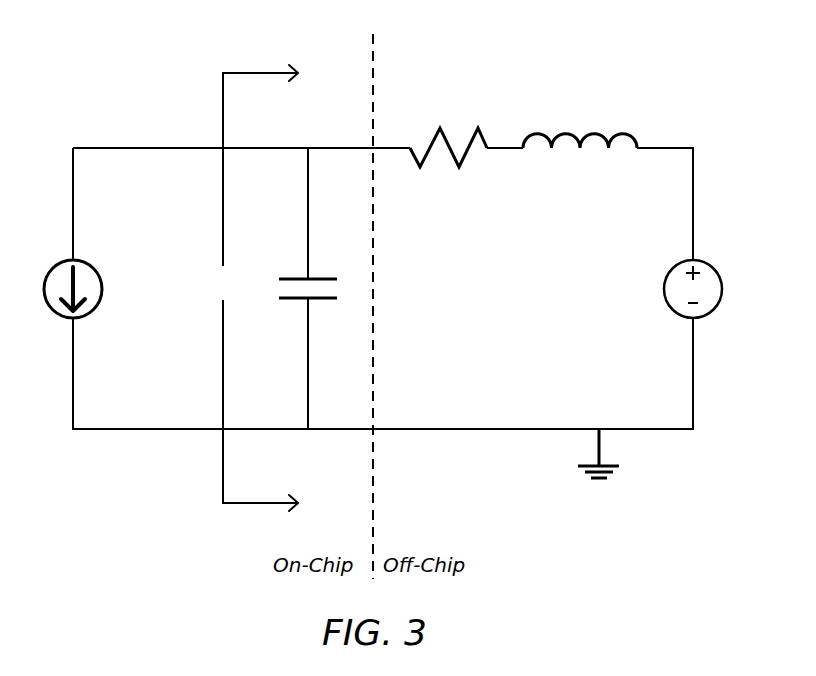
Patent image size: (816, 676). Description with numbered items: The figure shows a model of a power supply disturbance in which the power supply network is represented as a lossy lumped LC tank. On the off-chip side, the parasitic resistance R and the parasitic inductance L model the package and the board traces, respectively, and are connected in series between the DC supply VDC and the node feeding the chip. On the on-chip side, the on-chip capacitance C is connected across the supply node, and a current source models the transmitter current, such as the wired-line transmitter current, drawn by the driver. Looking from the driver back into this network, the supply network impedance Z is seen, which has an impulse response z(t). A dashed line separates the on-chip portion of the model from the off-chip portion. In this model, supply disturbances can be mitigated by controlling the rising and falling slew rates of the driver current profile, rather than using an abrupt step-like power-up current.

The supply network impedance Z is at (255, 288).
The on-chip capacitance C is at (308, 288).
The parasitic resistance R is at (448, 163).
The parasitic inductance L is at (580, 156).
The DC supply voltage source VDC is at (706, 275).